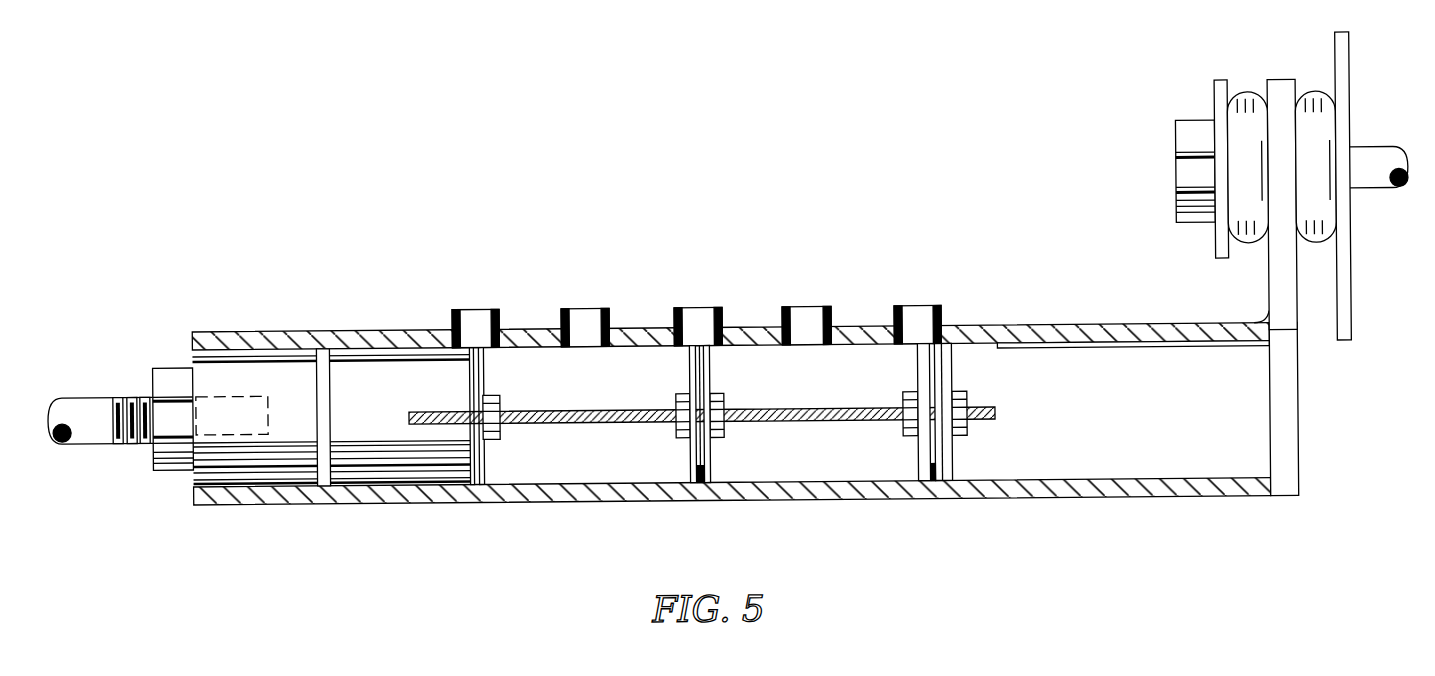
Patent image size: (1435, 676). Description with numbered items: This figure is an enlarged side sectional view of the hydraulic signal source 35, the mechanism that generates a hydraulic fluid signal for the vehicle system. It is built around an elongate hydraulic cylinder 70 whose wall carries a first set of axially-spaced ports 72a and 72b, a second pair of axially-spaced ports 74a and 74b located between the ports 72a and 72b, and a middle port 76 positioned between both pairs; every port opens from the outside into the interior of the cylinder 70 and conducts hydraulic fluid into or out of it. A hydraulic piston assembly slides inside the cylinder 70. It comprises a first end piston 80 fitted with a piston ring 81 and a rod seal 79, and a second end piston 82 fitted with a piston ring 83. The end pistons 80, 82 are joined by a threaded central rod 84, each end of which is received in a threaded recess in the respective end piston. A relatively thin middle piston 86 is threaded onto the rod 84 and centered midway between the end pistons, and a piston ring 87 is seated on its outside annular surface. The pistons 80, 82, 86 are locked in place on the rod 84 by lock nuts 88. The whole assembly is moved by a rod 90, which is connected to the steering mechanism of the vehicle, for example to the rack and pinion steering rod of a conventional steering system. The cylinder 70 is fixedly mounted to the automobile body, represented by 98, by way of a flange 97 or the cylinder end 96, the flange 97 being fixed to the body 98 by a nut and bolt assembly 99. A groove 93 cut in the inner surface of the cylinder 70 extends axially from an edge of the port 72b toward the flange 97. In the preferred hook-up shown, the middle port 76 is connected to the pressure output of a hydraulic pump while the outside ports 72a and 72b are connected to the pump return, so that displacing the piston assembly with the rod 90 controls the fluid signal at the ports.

The tensioner assembly 35 is at (728, 295).
The hydraulic cylinder 70 is at (305, 332).
The port 72a is at (477, 312).
The port 72b is at (919, 312).
The port 74a is at (587, 312).
The port 74b is at (807, 312).
The middle port 76 is at (701, 312).
The rod seal 79 is at (323, 480).
The first end piston 80 is at (397, 470).
The piston ring 81 is at (462, 470).
The second end piston 82 is at (945, 458).
The piston ring 83 is at (938, 487).
The threaded central rod 84 is at (572, 426).
The middle piston 86 is at (708, 452).
The piston ring 87 is at (700, 487).
The lock nuts 88 is at (500, 404).
The rod 90 is at (97, 397).
The groove 93 is at (1050, 350).
The cylinder end 96 is at (1298, 453).
The flange 97 is at (1270, 292).
The body of the automobile 98 is at (1352, 72).
The nut and bolt assembly 99 is at (1192, 186).